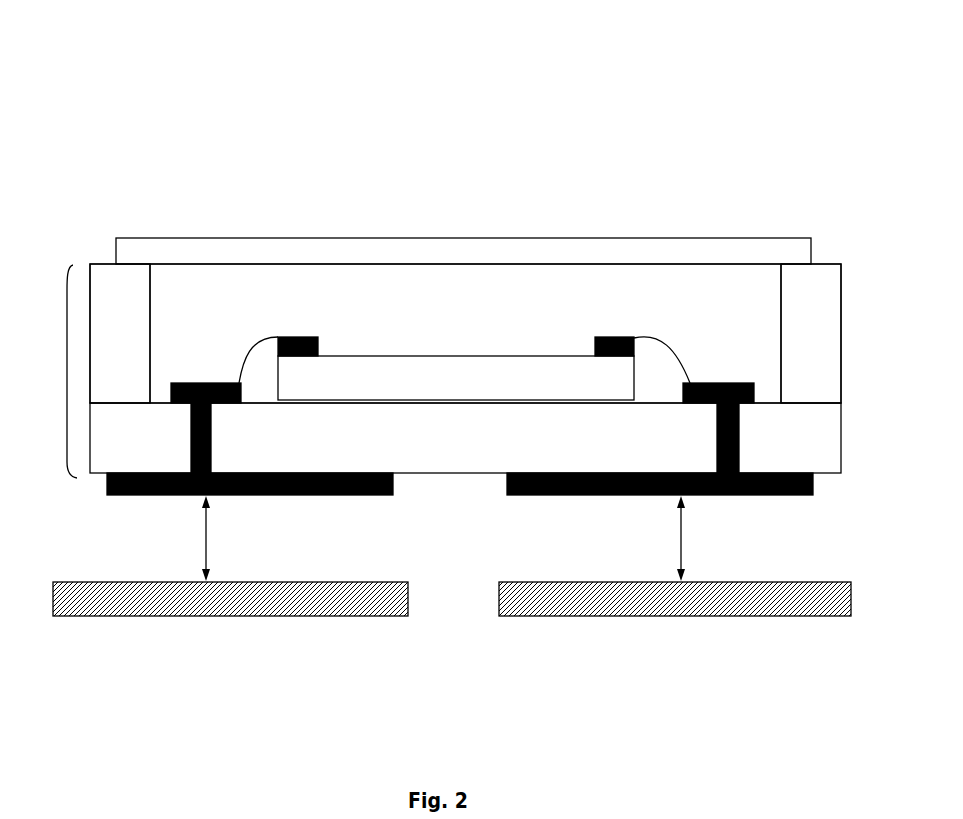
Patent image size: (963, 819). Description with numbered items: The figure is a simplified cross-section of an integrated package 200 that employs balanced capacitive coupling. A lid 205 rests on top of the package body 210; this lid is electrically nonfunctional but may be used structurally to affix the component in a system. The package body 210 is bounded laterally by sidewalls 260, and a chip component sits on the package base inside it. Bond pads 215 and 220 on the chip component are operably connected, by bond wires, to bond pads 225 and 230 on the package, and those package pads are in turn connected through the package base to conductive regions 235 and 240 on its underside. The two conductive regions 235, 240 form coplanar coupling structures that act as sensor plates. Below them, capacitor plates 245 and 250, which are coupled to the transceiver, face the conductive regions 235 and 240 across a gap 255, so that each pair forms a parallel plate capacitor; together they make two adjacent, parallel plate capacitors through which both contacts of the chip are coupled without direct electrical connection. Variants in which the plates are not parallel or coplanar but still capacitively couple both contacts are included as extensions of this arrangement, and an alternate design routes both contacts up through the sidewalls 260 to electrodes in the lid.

The integrated package 200 is at (62, 34).
The lid 205 is at (693, 238).
The package body 210 is at (64, 372).
The bond pad 215 is at (607, 337).
The bond pad 220 is at (310, 337).
The bond pad 225 is at (712, 383).
The bond pad 230 is at (196, 383).
The conductive region 235 is at (765, 497).
The conductive region 240 is at (165, 496).
The capacitor plate 245 is at (740, 660).
The capacitor plate 250 is at (187, 617).
The gap 255 is at (206, 548).
The sidewalls 260 is at (101, 263).